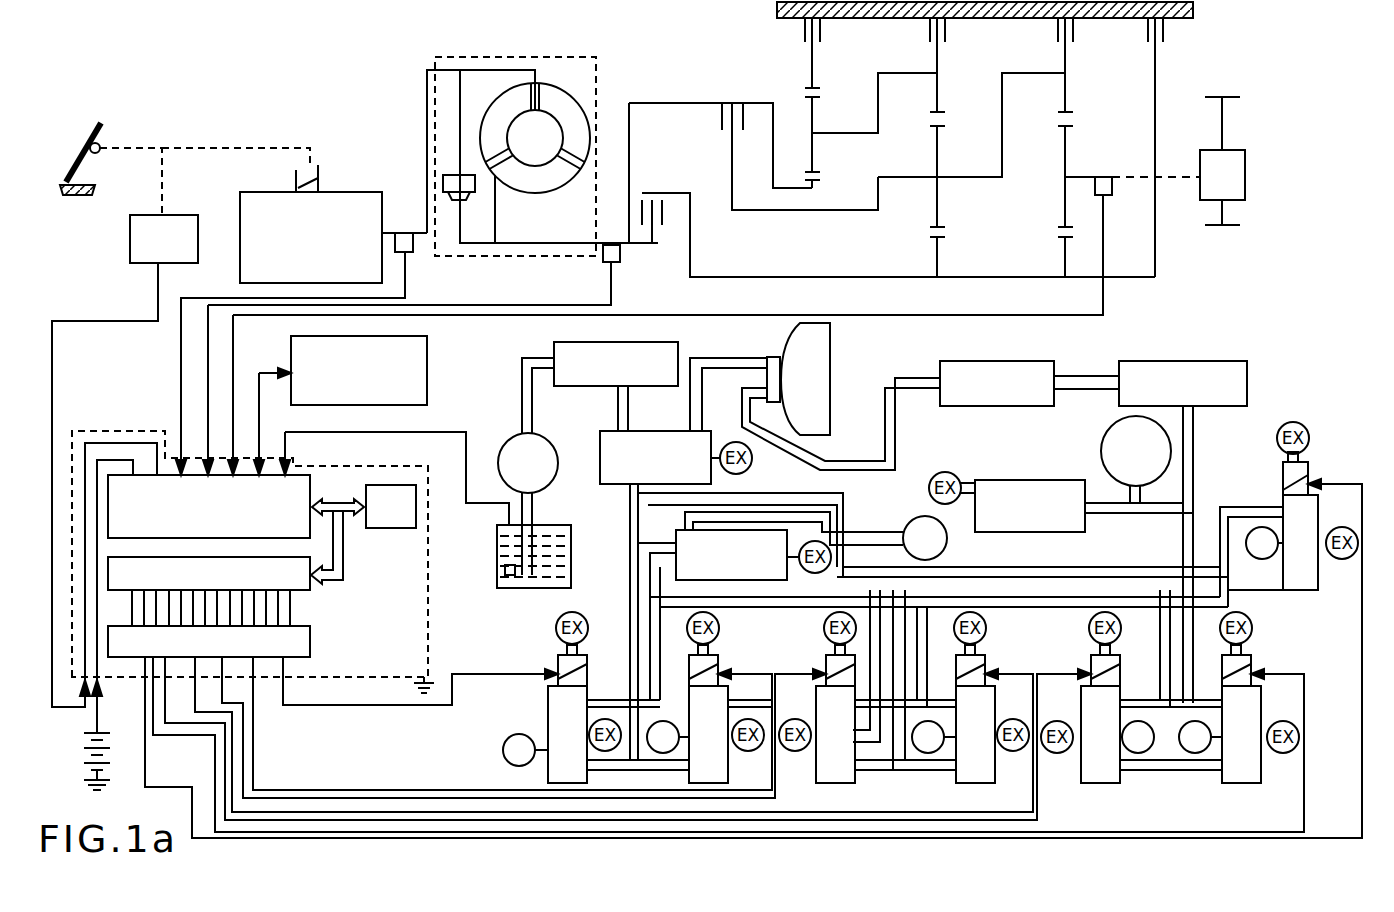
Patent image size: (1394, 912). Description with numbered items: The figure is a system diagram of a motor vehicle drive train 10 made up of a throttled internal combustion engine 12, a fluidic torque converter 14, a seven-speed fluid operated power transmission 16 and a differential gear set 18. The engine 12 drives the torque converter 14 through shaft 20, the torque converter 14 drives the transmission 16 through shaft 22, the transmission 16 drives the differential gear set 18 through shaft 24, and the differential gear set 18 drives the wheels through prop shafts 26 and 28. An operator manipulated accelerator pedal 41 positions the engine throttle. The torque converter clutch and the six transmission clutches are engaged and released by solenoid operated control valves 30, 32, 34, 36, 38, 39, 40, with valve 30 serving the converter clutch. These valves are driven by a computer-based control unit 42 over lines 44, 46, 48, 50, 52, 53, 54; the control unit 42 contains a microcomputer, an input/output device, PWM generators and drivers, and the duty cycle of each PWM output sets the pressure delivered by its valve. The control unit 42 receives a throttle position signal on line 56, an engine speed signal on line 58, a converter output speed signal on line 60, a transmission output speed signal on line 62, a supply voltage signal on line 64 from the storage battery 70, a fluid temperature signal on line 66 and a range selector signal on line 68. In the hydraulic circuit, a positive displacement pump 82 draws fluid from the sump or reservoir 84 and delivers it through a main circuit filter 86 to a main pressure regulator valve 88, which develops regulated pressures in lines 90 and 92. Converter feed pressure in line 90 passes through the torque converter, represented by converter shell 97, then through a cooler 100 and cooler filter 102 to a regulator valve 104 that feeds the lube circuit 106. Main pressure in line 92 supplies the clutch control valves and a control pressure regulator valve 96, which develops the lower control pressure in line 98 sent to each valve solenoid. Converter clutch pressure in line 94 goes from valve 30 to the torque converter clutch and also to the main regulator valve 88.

The motor vehicle drive train 10 is at (346, 105).
The internal combustion engine 12 is at (344, 202).
The torque converter 14 is at (466, 52).
The power transmission 16 is at (714, 85).
The differential gear set 18 is at (1202, 190).
The shaft 20 is at (425, 215).
The shaft 22 is at (624, 252).
The shaft 24 is at (1106, 180).
The prop shaft 26 is at (1232, 100).
The prop shaft 28 is at (1236, 222).
The solenoid operated control valve 30 is at (815, 730).
The solenoid operated control valve 32 is at (556, 724).
The solenoid operated control valve 34 is at (729, 707).
The solenoid operated control valve 36 is at (984, 760).
The solenoid operated control valve 38 is at (1100, 782).
The solenoid operated control valve 39 is at (1247, 782).
The solenoid operated control valve 40 is at (1297, 590).
The accelerator pedal 41 is at (76, 148).
The control unit 42 is at (432, 578).
The line 44 is at (248, 716).
The line 46 is at (346, 706).
The line 48 is at (372, 790).
The line 50 is at (236, 742).
The line 52 is at (166, 680).
The line 53 is at (192, 812).
The line 54 is at (212, 786).
The line 56 is at (54, 442).
The line 58 is at (181, 318).
The line 60 is at (207, 376).
The line 62 is at (236, 360).
The line 64 is at (102, 712).
The line 66 is at (438, 417).
The line 68 is at (246, 400).
The storage battery 70 is at (88, 742).
The positive displacement pump 82 is at (548, 456).
The sump or reservoir 84 is at (496, 578).
The main circuit filter 86 is at (568, 343).
The main pressure regulator valve 88 is at (686, 440).
The line 90 is at (722, 360).
The line 92 is at (628, 577).
The line 94 is at (752, 502).
The control pressure regulator valve 96 is at (748, 582).
The converter shell 97 is at (805, 362).
The line 98 is at (653, 640).
The cooler 100 is at (1000, 362).
The cooler filter 102 is at (1232, 380).
The regulator valve 104 is at (1072, 508).
The lube circuit 106 is at (1125, 430).